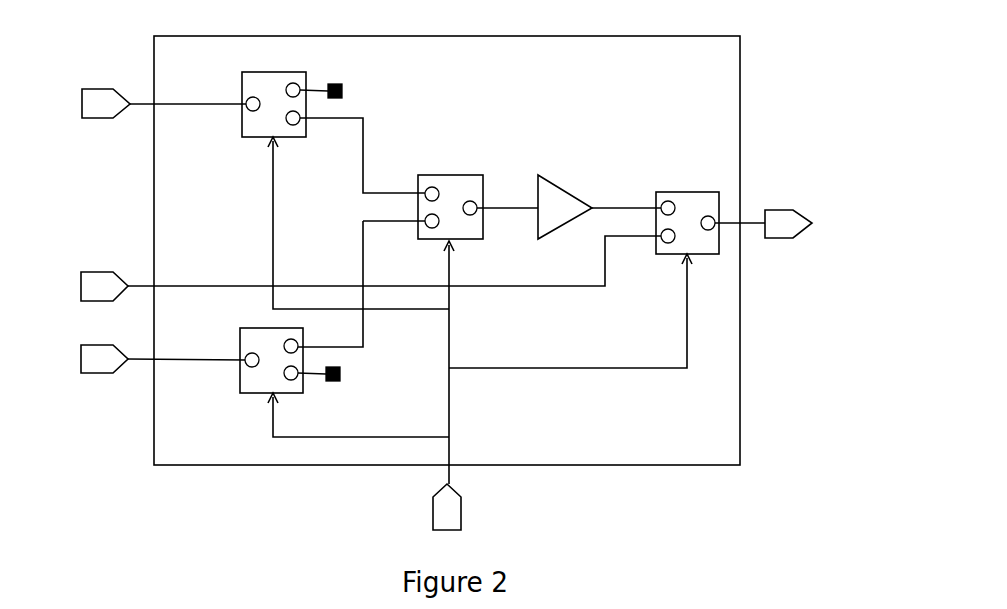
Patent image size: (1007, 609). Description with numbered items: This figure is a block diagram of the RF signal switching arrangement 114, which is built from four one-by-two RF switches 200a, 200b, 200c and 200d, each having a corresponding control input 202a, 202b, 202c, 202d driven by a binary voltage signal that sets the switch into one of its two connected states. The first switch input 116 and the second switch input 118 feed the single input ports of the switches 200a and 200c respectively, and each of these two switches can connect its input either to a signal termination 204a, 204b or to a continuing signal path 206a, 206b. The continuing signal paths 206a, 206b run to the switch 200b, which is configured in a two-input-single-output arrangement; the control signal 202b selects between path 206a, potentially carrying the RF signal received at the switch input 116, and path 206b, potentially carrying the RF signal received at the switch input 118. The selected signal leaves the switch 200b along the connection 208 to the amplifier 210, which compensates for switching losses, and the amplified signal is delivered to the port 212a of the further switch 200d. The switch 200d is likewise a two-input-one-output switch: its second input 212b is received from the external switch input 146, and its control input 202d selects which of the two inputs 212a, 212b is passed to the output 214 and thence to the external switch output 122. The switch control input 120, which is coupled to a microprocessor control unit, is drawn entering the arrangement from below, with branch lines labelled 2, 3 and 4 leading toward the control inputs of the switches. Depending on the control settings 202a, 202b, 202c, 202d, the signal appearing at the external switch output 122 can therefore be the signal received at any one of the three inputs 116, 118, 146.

The RF signal switching arrangement 114 is at (740, 88).
The first switch input 116 is at (108, 87).
The second switch input 118 is at (96, 377).
The external switch input 146 is at (92, 270).
The external switch output 122 is at (802, 207).
The switch control input 120 is at (463, 510).
The RF switch 200a is at (306, 72).
The RF switch 200b is at (467, 173).
The RF switch 200c is at (303, 393).
The RF switch 200d is at (685, 188).
The control input 202a is at (272, 181).
The control input 202b is at (452, 263).
The control input 202c is at (268, 422).
The control input 202d is at (683, 314).
The signal termination 204a is at (342, 91).
The signal termination 204b is at (342, 372).
The continuing signal path 206a is at (387, 188).
The continuing signal path 206b is at (390, 228).
The amplifier input line 208 is at (505, 203).
The amplifier 210 is at (567, 185).
The port 212a is at (632, 203).
The second input 212b is at (632, 240).
The output 214 is at (729, 228).
The control bus line 2 is at (443, 343).
The control bus line 3 is at (443, 407).
The control bus line 4 is at (443, 457).